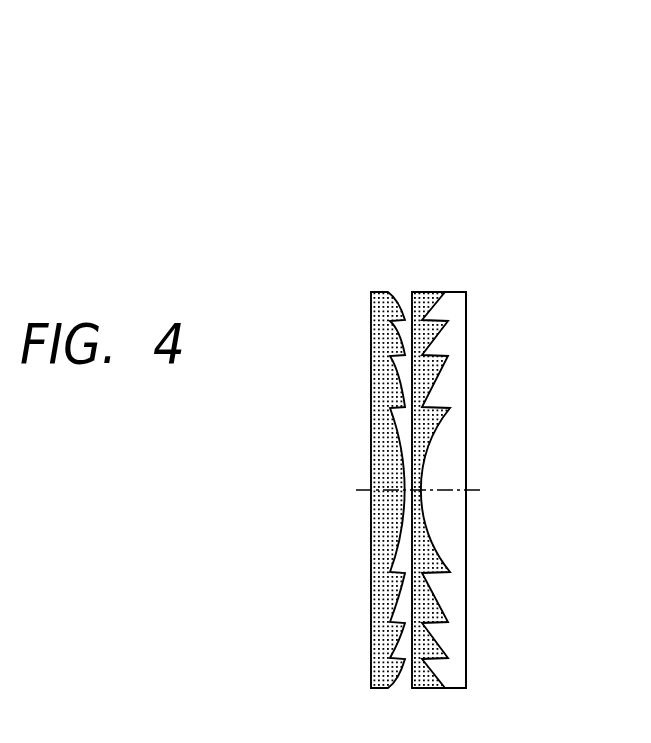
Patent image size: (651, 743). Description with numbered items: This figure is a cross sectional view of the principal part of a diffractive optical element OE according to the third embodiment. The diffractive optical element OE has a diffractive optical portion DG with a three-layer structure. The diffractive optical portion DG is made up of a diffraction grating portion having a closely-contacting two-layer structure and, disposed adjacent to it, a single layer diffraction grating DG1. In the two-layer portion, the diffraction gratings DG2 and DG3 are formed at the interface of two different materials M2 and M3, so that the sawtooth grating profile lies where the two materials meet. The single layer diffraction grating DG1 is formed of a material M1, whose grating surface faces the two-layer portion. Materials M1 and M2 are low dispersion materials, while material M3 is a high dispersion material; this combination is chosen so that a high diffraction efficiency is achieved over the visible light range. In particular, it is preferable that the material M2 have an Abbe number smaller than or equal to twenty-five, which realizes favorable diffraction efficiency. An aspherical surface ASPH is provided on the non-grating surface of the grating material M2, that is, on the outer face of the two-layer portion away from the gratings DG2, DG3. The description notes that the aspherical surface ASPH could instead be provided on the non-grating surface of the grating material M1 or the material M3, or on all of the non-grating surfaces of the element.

The diffractive optical element OE is at (492, 148).
The diffractive optical portion DG is at (550, 200).
The single layer diffraction grating DG1 is at (382, 290).
The diffraction grating DG2 is at (423, 291).
The diffraction grating DG3 is at (458, 295).
The aspherical surface ASPH is at (467, 400).
The material M1 is at (380, 600).
The material M2 is at (432, 550).
The material M3 is at (455, 607).